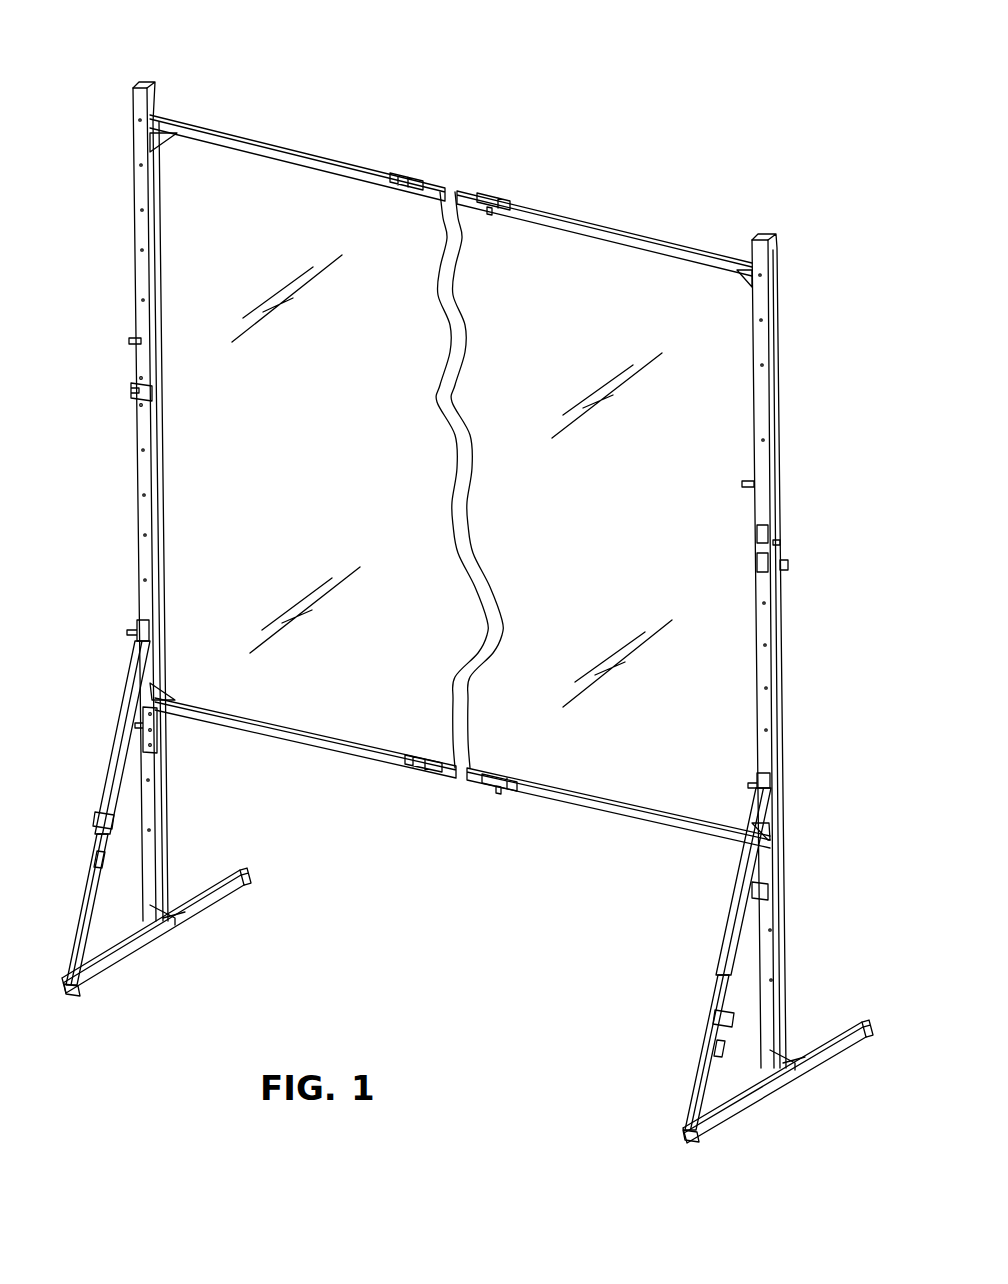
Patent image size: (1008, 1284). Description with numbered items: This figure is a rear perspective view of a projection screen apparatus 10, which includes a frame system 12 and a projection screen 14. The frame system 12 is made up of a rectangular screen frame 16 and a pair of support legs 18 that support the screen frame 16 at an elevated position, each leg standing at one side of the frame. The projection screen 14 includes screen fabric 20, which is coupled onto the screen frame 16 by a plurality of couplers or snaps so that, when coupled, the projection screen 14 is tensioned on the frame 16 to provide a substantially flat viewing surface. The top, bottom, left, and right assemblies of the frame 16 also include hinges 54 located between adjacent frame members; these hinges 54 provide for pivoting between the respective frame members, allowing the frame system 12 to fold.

The projection screen apparatus 10 is at (753, 185).
The frame system 12 is at (126, 75).
The projection screen 14 is at (562, 268).
The rectangular screen frame 16 is at (656, 240).
The support legs 18 is at (188, 798).
The screen fabric 20 is at (640, 504).
The hinges 54 is at (418, 165).